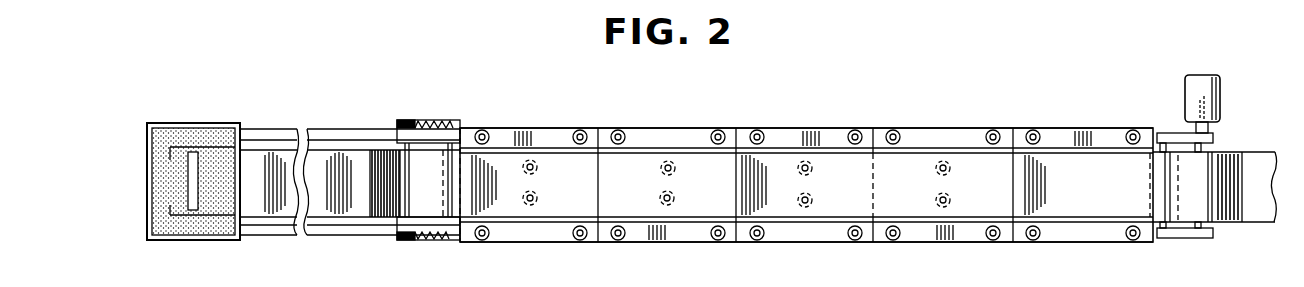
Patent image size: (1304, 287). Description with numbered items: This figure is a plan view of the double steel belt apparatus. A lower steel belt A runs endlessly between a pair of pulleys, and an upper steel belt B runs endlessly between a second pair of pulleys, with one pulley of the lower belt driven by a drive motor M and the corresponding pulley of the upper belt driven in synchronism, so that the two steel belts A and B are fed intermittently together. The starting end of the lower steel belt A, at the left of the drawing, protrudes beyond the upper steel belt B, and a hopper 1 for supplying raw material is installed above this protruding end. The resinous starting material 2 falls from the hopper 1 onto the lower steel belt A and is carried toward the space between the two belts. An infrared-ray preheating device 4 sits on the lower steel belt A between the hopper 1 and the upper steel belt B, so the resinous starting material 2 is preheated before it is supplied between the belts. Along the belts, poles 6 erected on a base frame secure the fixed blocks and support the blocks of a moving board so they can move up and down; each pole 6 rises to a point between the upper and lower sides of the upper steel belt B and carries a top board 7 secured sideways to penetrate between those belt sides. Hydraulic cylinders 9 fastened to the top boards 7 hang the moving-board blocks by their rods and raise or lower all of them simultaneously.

The hopper 1 is at (224, 126).
The resinous starting material 2 is at (167, 140).
The infrared-ray preheating device 4 is at (347, 160).
The poles 6 is at (482, 129).
The top board 7 is at (663, 130).
The hydraulic cylinders 9 is at (537, 195).
The lower steel belt A is at (1263, 224).
The upper steel belt B is at (790, 155).
The drive motor M is at (1200, 75).